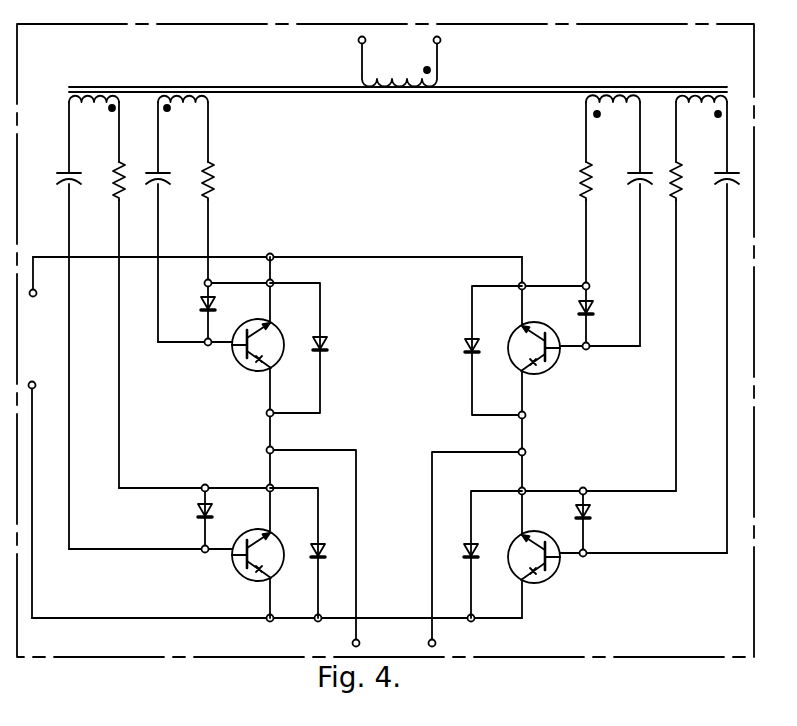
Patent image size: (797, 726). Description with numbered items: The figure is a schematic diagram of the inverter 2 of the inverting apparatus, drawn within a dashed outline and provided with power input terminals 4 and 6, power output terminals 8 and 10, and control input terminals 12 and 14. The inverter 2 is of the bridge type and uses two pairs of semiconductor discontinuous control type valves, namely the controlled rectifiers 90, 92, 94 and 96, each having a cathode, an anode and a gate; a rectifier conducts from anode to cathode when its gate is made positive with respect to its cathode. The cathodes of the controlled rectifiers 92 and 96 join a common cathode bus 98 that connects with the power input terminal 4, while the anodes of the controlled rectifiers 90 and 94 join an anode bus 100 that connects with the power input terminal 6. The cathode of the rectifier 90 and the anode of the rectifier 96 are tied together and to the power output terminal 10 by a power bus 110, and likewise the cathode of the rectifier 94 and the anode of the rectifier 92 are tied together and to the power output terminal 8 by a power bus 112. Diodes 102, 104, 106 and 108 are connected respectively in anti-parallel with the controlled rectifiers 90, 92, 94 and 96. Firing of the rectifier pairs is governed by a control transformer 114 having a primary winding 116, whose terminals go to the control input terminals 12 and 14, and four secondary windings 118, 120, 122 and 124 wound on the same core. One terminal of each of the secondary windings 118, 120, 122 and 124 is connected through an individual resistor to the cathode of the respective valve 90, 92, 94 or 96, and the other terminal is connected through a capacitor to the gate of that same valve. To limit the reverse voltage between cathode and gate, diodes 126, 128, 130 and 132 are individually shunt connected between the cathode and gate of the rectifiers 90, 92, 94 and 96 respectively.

The inverter 2 is at (250, 24).
The power input terminal 4 is at (33, 297).
The power input terminal 6 is at (32, 381).
The power output terminal 8 is at (352, 644).
The power output terminal 10 is at (437, 643).
The control input terminal 12 is at (358, 40).
The control input terminal 14 is at (441, 40).
The controlled rectifier 90 is at (557, 571).
The controlled rectifier 92 is at (232, 353).
The controlled rectifier 94 is at (236, 572).
The controlled rectifier 96 is at (513, 350).
The common cathode bus 98 is at (348, 257).
The anode bus 100 is at (412, 618).
The diode 102 is at (466, 551).
The diode 104 is at (327, 345).
The diode 106 is at (324, 553).
The diode 108 is at (468, 346).
The power bus 110 is at (462, 452).
The power bus 112 is at (319, 450).
The control transformer 114 is at (410, 118).
The primary winding 116 is at (403, 78).
The secondary winding 118 is at (711, 108).
The secondary winding 120 is at (203, 106).
The secondary winding 122 is at (91, 322).
The secondary winding 124 is at (632, 108).
The diode 126 is at (592, 513).
The diode 128 is at (203, 308).
The diode 130 is at (198, 512).
The diode 132 is at (599, 318).